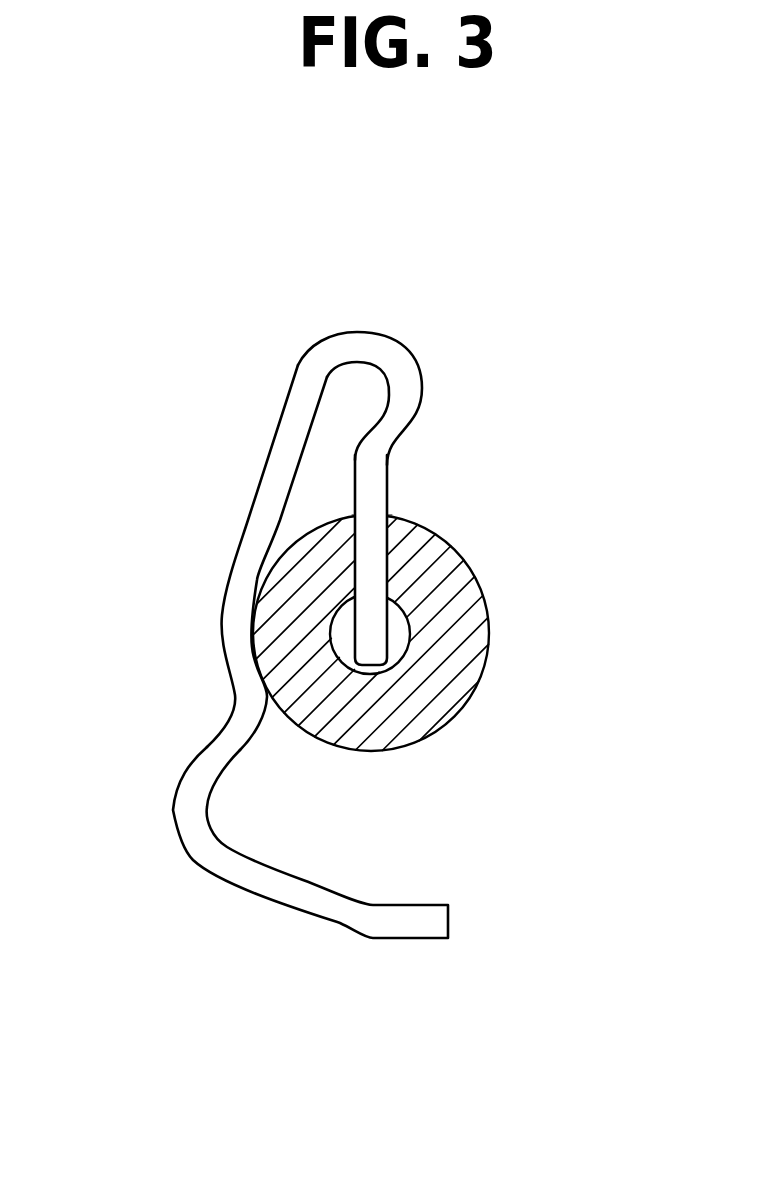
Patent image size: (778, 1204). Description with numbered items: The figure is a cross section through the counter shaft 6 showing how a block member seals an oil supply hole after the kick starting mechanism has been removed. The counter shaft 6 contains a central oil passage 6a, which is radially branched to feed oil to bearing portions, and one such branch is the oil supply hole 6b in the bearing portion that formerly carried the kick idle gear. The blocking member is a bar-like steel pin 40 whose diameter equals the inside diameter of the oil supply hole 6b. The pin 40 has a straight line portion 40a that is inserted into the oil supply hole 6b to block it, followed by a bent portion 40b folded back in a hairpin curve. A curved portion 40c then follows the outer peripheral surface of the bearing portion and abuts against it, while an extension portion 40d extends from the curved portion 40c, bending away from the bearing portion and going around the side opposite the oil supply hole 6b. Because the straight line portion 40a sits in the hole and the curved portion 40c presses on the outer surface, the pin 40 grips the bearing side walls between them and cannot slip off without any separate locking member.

The counter shaft 6 is at (492, 627).
The oil passage 6a is at (397, 642).
The oil supply hole 6b is at (392, 515).
The pin 40 is at (339, 627).
The straight line portion 40a is at (370, 579).
The bent portion 40b is at (383, 333).
The curved portion 40c is at (222, 636).
The extension portion 40d is at (307, 918).